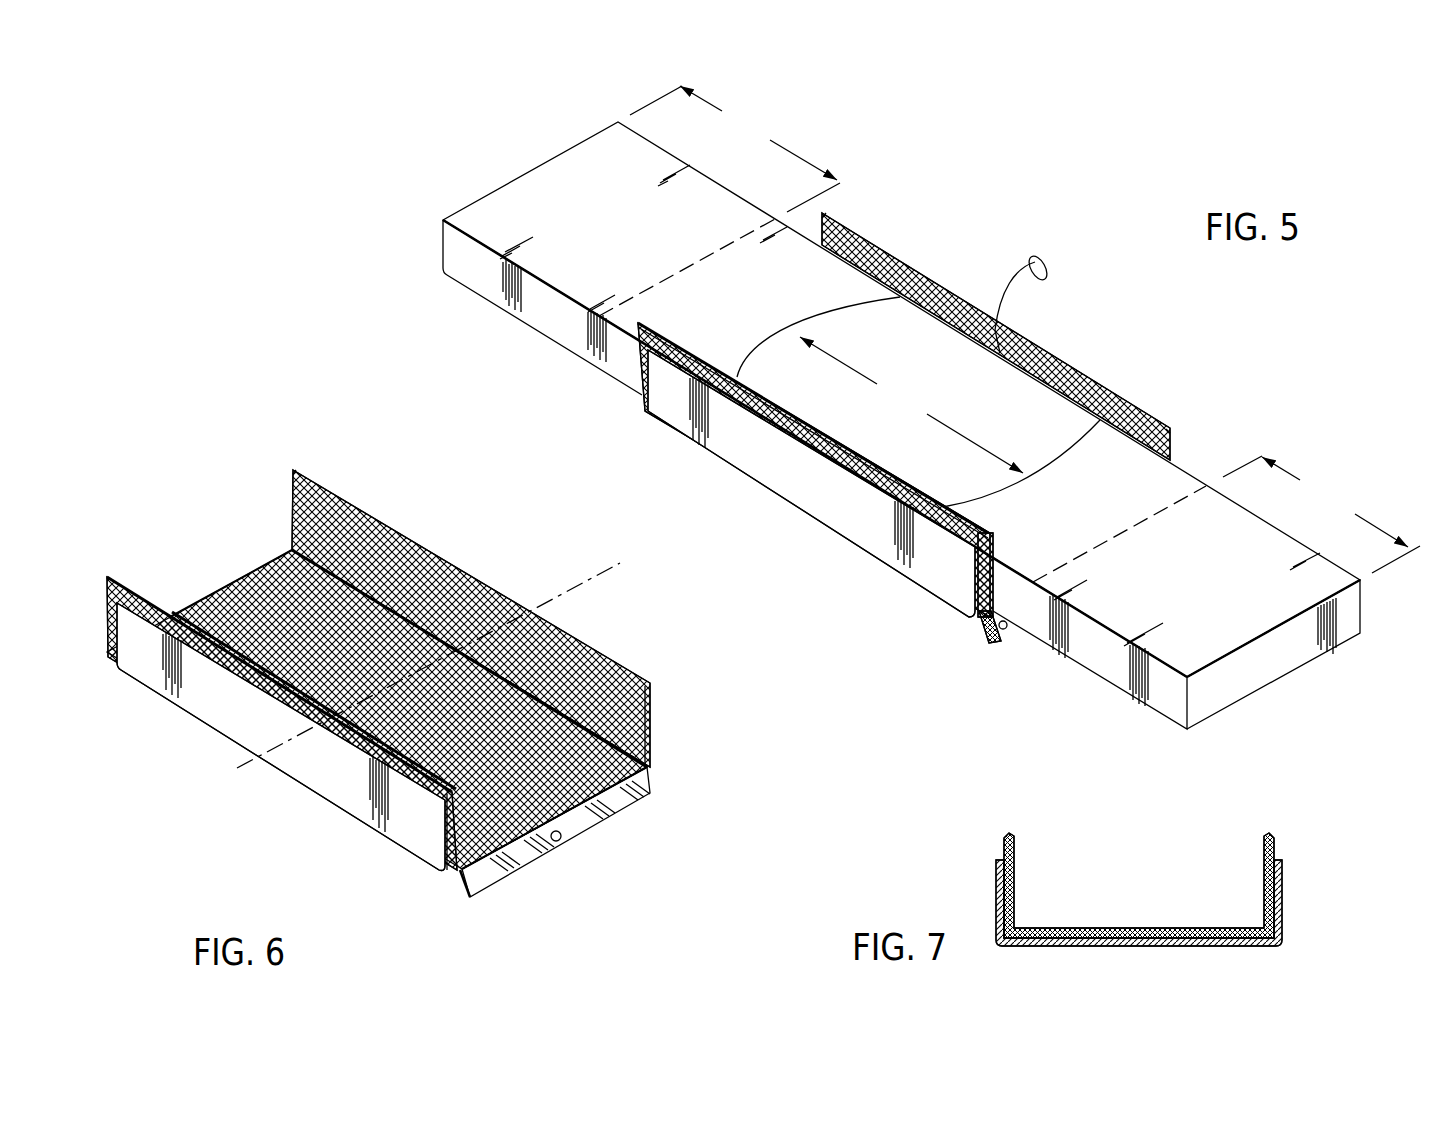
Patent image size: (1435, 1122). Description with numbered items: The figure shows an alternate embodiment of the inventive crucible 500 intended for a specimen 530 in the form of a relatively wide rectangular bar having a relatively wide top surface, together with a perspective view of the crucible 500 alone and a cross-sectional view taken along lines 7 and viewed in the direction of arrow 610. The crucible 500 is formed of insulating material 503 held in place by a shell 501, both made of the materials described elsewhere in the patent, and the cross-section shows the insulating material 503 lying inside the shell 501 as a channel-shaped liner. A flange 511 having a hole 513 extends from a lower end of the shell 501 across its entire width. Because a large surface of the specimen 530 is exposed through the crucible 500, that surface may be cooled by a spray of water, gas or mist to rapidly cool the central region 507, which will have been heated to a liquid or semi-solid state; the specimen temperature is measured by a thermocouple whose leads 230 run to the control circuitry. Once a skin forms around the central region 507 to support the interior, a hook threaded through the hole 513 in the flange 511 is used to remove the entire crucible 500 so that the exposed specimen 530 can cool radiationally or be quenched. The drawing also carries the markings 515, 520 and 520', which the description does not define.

In FIG. 5, the crucible 500 is at (927, 429).
In FIG. 6, the crucible 500 is at (378, 653).
In FIG. 7, the crucible 500 is at (1179, 866).
In FIG. 5, the shell 501 is at (812, 500).
In FIG. 6, the shell 501 is at (345, 810).
In FIG. 7, the shell 501 is at (1285, 898).
In FIG. 5, the insulating material 503 is at (637, 365).
In FIG. 6, the insulating material 503 is at (378, 670).
In FIG. 7, the insulating material 503 is at (1278, 847).
In FIG. 5, the central region 507 is at (918, 402).
In FIG. 5, the flange 511 is at (980, 630).
In FIG. 6, the flange 511 is at (607, 808).
In FIG. 5, the hole 513 is at (1001, 636).
In FIG. 6, the hole 513 is at (562, 841).
In FIG. 5, the block 515 is at (1100, 653).
In FIG. 5, the specimen 530 is at (1300, 657).
In FIG. 5, the end length dimension 520 is at (735, 149).
In FIG. 5, the opposite end length dimension 520' is at (1321, 514).
In FIG. 5, the leads 230 is at (1046, 272).
In FIG. 6, the arrow 610 is at (405, 709).
In FIG. 6, the lines 7— 7 is at (627, 562).